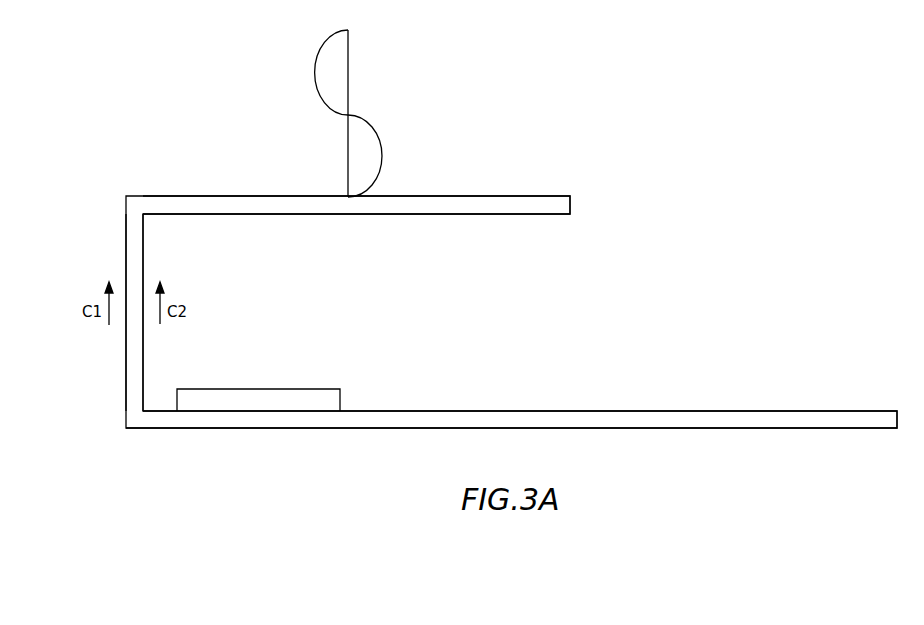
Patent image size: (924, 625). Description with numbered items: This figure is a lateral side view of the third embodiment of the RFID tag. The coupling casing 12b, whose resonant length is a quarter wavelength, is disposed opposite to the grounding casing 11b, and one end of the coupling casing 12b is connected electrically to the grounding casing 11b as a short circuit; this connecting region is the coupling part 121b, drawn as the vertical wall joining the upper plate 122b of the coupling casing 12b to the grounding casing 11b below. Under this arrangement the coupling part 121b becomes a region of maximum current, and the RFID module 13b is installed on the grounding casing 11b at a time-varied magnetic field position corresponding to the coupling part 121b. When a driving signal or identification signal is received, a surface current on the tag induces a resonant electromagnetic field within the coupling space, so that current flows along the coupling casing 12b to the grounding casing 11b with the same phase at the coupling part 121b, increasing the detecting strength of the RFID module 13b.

The coupling casing 12b is at (210, 185).
The second plate portion 122b is at (521, 206).
The coupling part 121b is at (129, 367).
The grounding casing 11b is at (703, 418).
The RFID module 13b is at (276, 400).